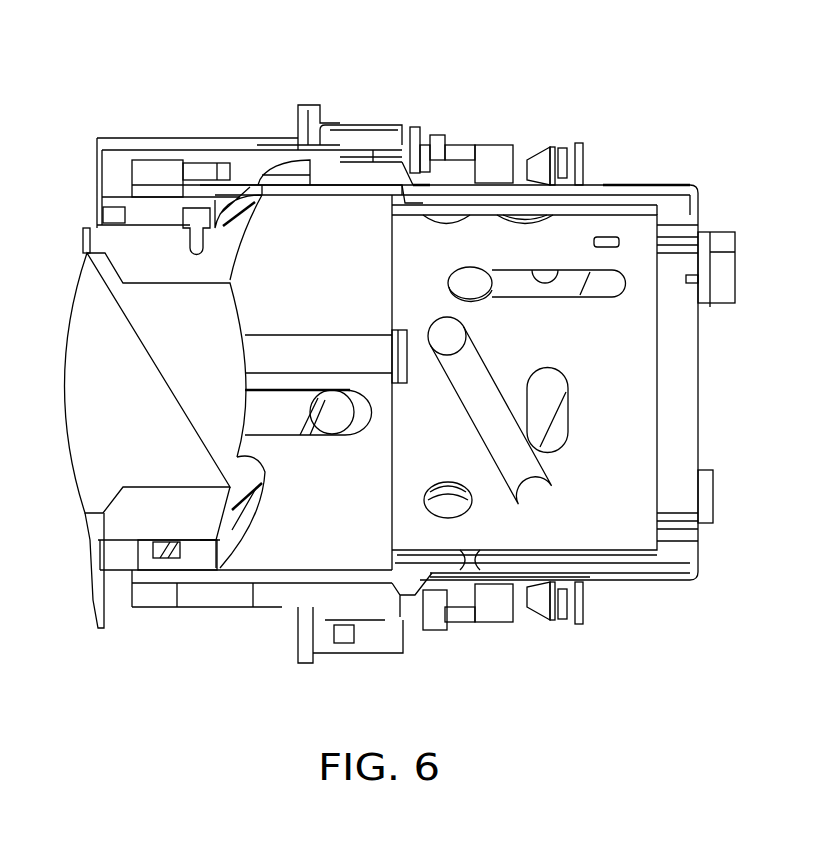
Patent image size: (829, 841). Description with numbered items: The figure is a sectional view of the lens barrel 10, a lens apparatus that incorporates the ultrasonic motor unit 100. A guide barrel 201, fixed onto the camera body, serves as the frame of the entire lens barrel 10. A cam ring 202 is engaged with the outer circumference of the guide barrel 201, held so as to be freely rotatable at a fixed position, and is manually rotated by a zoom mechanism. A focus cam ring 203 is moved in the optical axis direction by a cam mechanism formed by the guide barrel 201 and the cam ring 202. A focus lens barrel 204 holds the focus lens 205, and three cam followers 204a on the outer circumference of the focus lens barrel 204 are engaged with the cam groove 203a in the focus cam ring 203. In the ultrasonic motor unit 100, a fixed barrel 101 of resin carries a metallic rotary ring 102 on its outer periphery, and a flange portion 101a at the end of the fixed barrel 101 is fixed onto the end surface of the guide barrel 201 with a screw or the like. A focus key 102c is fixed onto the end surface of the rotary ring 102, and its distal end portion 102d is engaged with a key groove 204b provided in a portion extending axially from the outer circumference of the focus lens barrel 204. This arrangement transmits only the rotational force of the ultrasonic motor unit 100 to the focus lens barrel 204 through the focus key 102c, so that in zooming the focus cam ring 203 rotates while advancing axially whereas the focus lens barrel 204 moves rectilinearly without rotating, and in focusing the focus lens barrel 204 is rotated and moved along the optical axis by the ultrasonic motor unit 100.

The lens barrel 10 is at (738, 26).
The ultrasonic motor unit 100 is at (577, 662).
The fixed barrel 101 is at (677, 185).
The flange portion 101a is at (708, 480).
The rotary ring 102 is at (428, 127).
The focus key 102c is at (333, 125).
The distal end portion 102d is at (275, 138).
The guide barrel 201 is at (608, 212).
The cam ring 202 is at (640, 193).
The focus cam ring 203 is at (148, 210).
The cam groove 203a is at (197, 212).
The focus lens barrel 204 is at (188, 510).
The cam followers 204a is at (178, 205).
The key groove 204b is at (230, 150).
The focus lens 205 is at (85, 372).